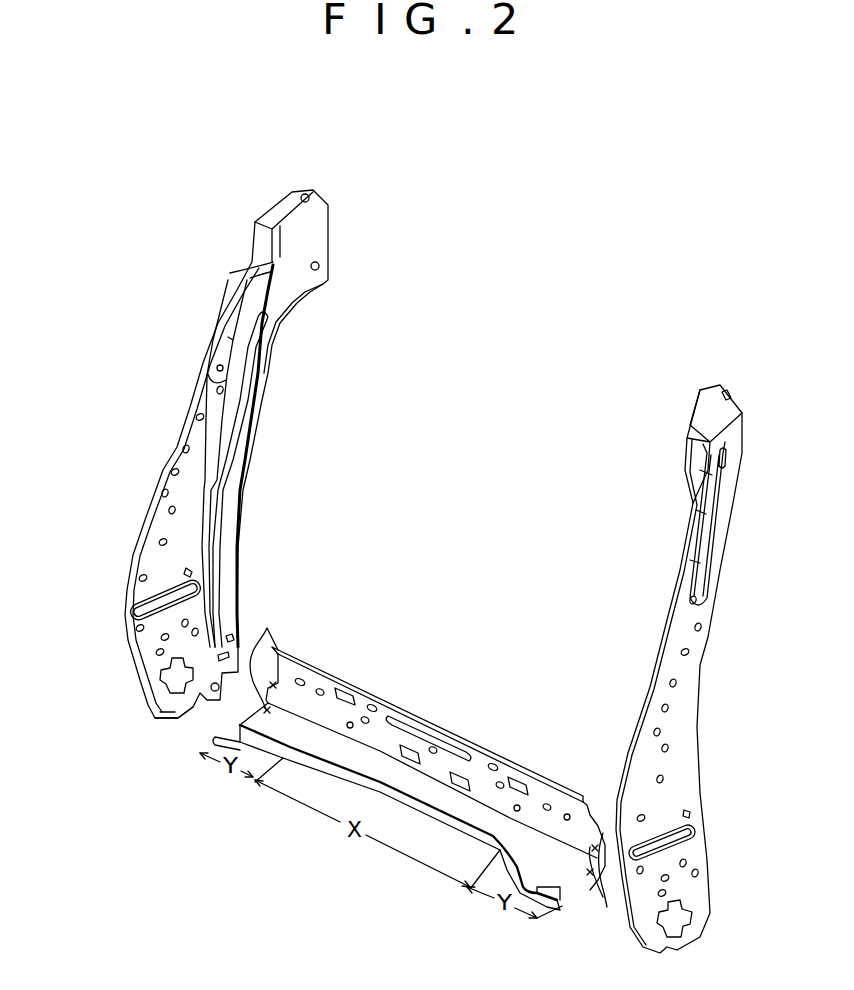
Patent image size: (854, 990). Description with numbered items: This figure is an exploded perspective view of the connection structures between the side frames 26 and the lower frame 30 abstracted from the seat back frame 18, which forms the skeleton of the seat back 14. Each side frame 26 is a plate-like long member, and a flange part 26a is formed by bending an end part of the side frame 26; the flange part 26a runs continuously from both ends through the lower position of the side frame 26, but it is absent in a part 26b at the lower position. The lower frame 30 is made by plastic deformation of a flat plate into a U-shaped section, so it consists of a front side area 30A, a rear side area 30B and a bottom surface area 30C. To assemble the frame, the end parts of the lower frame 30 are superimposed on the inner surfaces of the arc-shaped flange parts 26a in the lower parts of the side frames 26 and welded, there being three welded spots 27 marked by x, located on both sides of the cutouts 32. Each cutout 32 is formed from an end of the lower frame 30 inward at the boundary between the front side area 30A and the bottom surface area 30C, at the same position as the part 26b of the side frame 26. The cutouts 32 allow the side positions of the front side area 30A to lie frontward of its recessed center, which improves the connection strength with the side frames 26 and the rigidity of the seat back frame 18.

The seat back 14 is at (225, 454).
The seat back frame 18 is at (183, 333).
The side frame 26 is at (190, 462).
The flange part 26a is at (178, 429).
The part at the lower position 26b is at (198, 720).
The welded spot 27 is at (267, 630).
The lower frame 30 is at (422, 760).
The front side area 30A is at (392, 793).
The rear side area 30B is at (392, 733).
The bottom surface area 30C is at (268, 734).
The cutout 32 is at (240, 740).